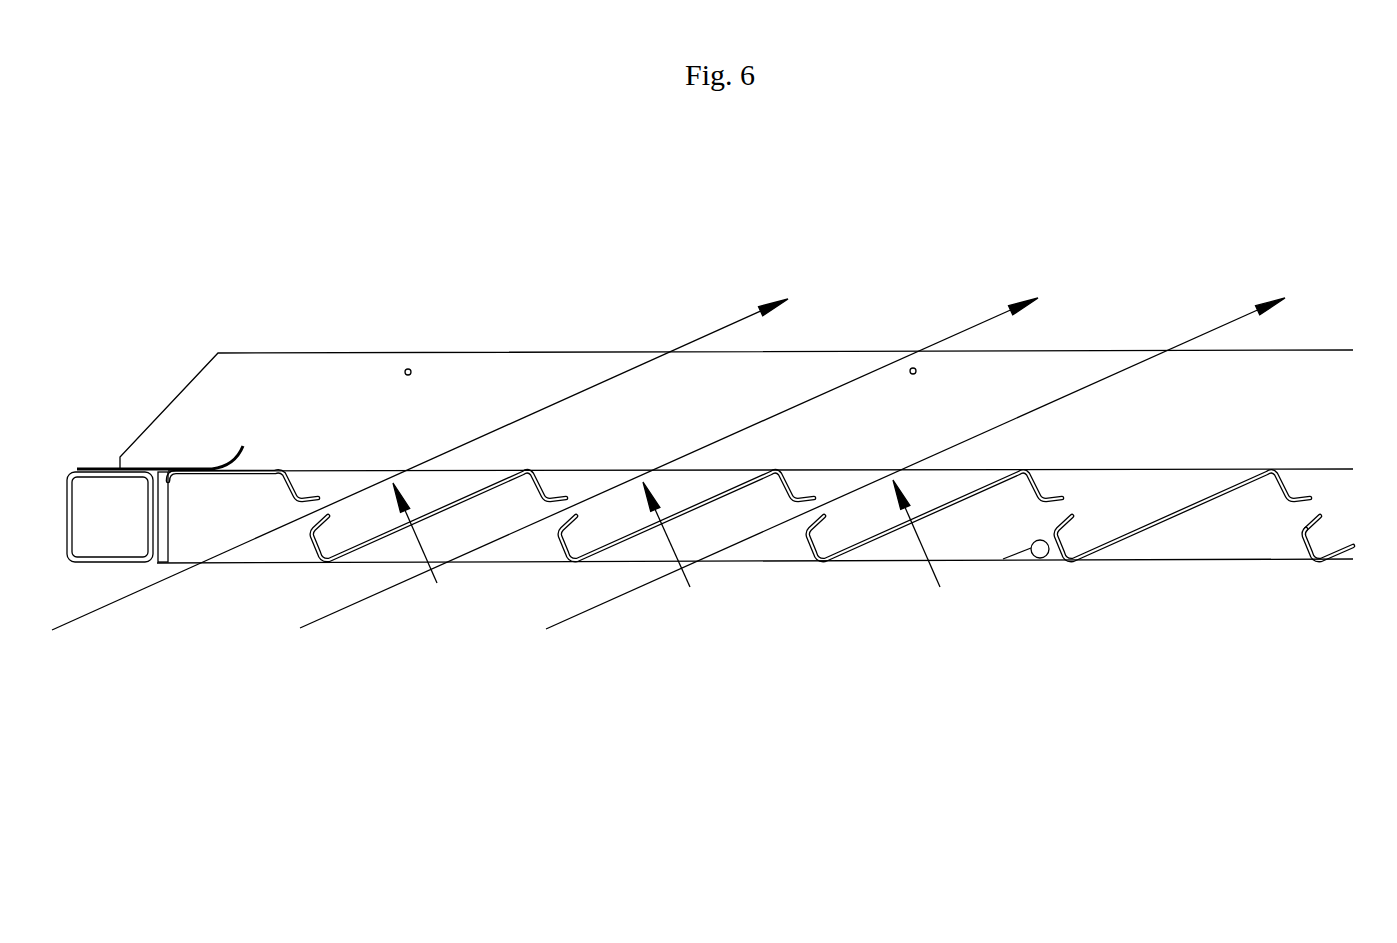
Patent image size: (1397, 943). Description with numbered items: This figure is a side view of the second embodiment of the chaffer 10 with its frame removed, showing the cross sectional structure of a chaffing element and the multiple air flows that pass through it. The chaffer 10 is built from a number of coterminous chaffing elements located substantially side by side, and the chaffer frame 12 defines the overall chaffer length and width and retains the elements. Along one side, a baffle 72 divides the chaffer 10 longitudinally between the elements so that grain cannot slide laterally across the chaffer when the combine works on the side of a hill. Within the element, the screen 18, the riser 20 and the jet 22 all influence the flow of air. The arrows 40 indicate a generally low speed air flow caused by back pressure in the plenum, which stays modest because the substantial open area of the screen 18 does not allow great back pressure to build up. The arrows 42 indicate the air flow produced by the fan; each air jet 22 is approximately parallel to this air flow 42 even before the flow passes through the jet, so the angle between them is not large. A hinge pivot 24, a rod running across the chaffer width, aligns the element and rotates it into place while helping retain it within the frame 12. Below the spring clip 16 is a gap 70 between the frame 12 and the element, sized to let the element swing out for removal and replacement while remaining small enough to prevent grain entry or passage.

The chaffer 10 is at (471, 298).
The chaffer frame 12 is at (68, 471).
The spring clip 16 is at (242, 447).
The screen 18 is at (973, 498).
The riser 20 is at (1306, 540).
The jet 22 is at (1303, 520).
The hinge pivot 24 is at (1035, 560).
The arrows 40 is at (437, 573).
The air flow 42 is at (157, 587).
The gap 70 is at (161, 500).
The baffle 72 is at (158, 565).